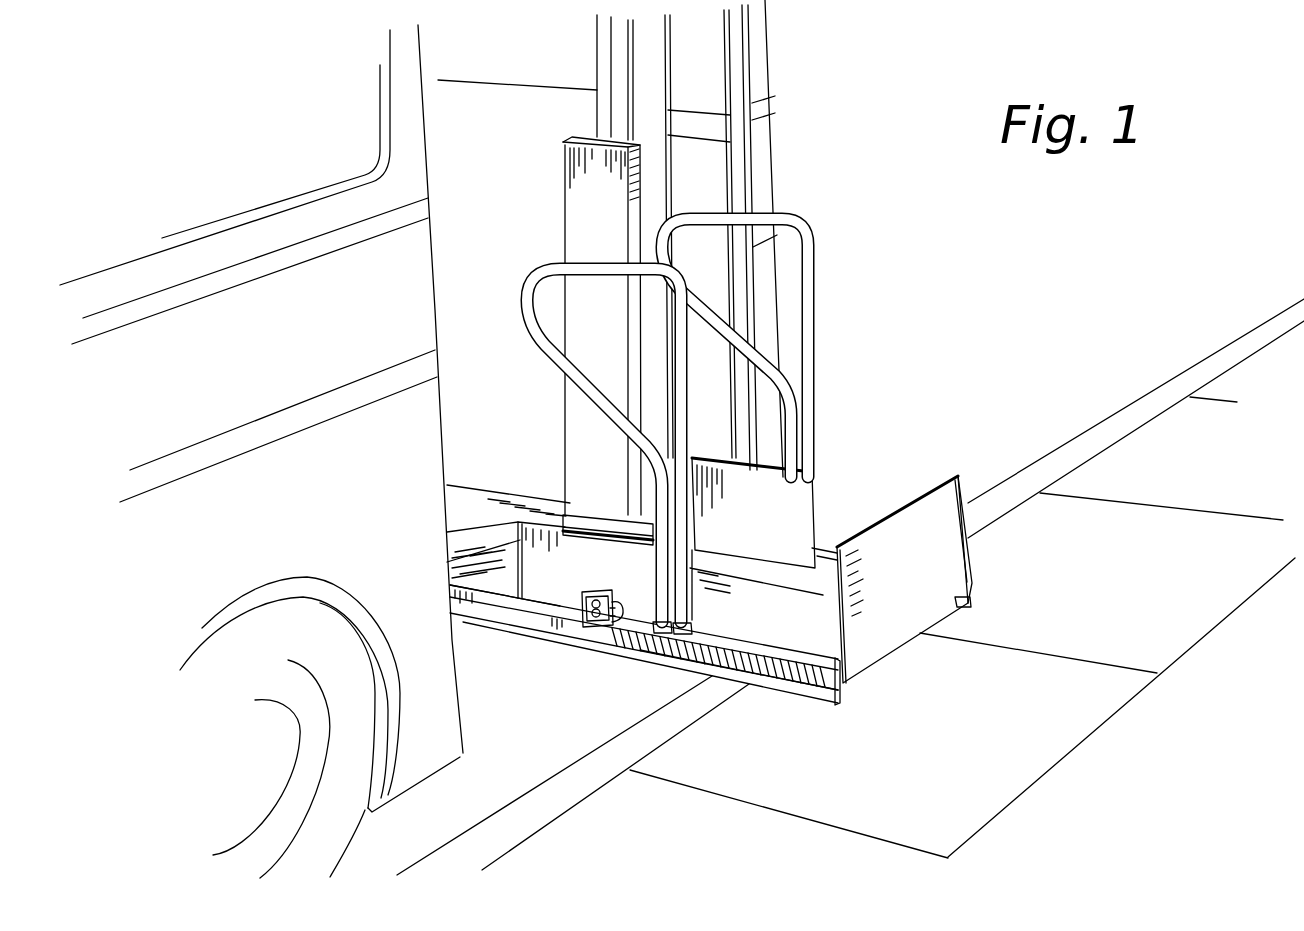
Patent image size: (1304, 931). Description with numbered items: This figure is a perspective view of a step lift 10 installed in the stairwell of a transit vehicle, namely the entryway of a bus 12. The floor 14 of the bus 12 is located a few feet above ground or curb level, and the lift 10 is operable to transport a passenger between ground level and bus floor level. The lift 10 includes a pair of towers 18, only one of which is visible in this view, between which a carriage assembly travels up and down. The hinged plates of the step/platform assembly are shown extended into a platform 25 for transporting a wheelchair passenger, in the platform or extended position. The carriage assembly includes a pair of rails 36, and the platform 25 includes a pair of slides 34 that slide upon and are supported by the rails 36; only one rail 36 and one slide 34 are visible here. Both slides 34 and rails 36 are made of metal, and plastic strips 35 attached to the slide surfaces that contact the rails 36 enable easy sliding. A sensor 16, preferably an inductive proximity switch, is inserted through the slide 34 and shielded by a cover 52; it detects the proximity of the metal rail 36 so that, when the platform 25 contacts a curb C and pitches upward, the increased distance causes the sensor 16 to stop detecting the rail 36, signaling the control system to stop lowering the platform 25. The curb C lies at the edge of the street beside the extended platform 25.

The lift 10 is at (840, 348).
The bus 12 is at (360, 510).
The floor 14 is at (465, 500).
The sensor 16 is at (583, 622).
The towers 18 is at (573, 218).
The platform 25 is at (783, 625).
The slides 34 is at (622, 662).
The strips 35 is at (663, 657).
The rails 36 is at (522, 620).
The cover 52 is at (620, 613).
The curb C is at (1067, 465).